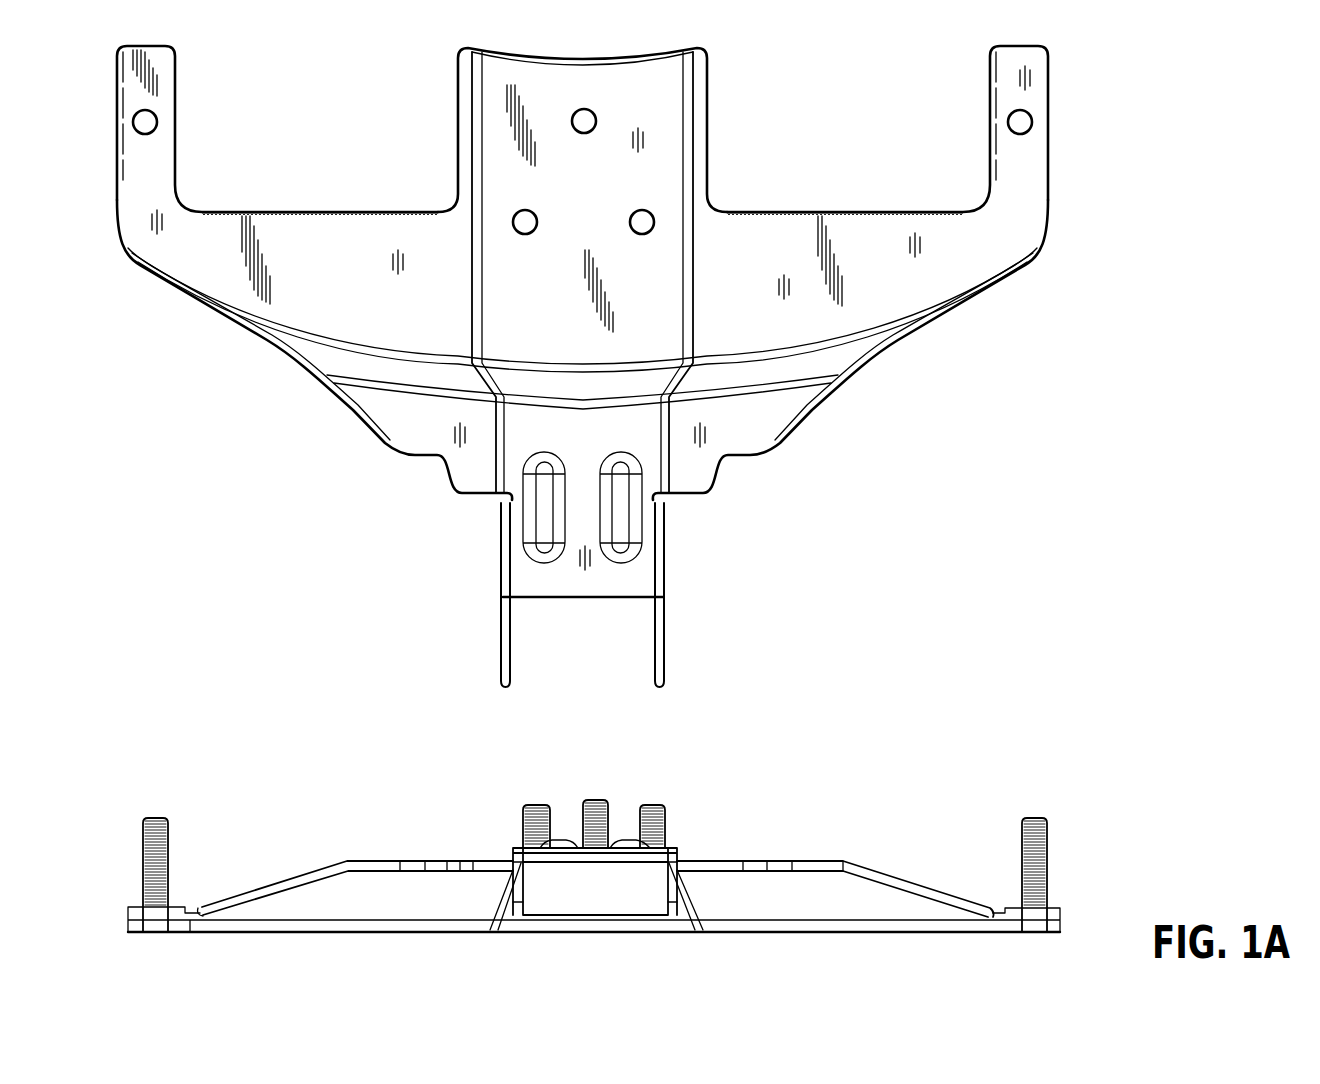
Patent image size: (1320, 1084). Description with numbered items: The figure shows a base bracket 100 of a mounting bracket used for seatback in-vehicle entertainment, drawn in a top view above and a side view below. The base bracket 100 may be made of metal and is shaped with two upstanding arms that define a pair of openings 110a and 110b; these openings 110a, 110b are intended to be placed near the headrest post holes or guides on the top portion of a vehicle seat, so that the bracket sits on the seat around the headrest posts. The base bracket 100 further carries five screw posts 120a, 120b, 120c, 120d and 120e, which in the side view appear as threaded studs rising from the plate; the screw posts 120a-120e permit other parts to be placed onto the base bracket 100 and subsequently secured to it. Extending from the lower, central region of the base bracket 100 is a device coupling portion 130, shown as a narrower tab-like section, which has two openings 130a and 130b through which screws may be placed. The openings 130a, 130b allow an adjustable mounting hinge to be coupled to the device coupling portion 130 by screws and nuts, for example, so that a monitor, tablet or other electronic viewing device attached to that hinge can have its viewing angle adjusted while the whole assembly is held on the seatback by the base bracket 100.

The base bracket 100 is at (320, 396).
The opening 110a is at (258, 186).
The opening 110b is at (812, 186).
The screw post 120a is at (153, 813).
The screw post 120b is at (519, 808).
The screw post 120c is at (595, 797).
The screw post 120d is at (670, 808).
The screw post 120e is at (1050, 856).
The device coupling portion 130 is at (584, 595).
The opening 130a is at (491, 666).
The opening 130b is at (672, 666).